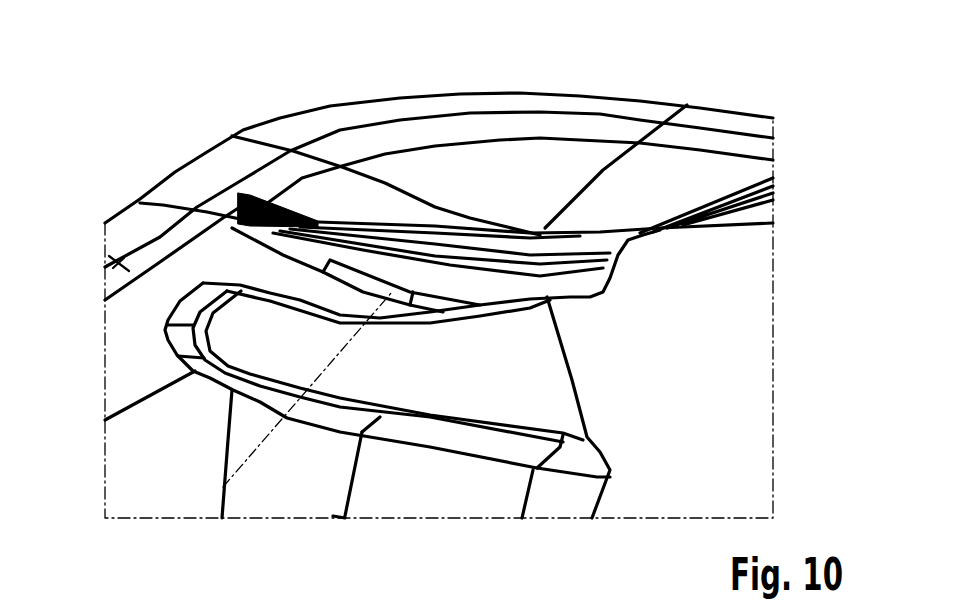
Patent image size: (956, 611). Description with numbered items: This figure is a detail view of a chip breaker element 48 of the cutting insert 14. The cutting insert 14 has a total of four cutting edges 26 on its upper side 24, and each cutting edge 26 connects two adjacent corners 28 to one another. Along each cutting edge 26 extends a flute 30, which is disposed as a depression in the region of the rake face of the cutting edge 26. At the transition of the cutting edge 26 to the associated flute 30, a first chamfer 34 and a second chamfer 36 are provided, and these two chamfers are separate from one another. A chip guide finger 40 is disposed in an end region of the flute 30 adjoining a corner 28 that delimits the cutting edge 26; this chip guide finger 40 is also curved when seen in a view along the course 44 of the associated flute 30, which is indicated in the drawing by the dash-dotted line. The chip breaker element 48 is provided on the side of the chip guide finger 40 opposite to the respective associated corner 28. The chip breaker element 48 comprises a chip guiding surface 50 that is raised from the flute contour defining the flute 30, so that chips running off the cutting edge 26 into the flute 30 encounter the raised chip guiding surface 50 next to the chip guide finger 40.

The cutting insert 14 is at (618, 86).
The upper side 24 is at (706, 129).
The cutting edge 26 is at (130, 204).
The corner 28 is at (355, 98).
The flute 30 is at (135, 492).
The first chamfer 34 is at (110, 258).
The second chamfer 36 is at (120, 318).
The chip guide finger 40 is at (455, 243).
The course of the flute 44 is at (261, 450).
The chip breaker element 48 is at (237, 328).
The chip guiding surface 50 is at (397, 337).